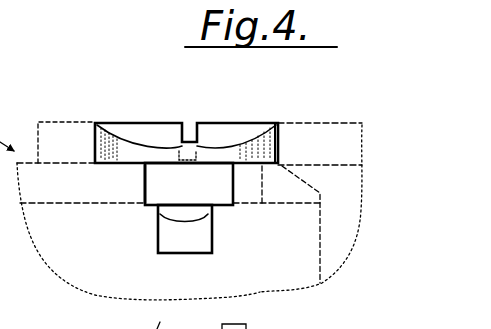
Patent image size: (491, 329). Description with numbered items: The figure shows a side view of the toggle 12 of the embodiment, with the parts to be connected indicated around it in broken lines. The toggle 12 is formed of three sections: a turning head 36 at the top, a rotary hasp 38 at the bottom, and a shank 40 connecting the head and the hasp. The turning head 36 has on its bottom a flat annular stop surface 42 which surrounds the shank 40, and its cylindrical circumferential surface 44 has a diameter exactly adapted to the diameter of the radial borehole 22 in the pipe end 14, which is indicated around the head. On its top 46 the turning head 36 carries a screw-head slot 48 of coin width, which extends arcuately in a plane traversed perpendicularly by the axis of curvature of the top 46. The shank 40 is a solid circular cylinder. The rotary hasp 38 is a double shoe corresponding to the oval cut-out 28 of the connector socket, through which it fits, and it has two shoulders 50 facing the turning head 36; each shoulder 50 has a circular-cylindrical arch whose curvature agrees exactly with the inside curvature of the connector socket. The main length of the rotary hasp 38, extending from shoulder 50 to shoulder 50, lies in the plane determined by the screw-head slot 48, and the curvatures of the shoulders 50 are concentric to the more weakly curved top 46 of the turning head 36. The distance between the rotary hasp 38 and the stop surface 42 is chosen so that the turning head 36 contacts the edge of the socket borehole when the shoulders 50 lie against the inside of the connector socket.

The toggle 12 is at (160, 118).
The pipe end 14 is at (50, 122).
The radial borehole 22 is at (94, 142).
The oval cut-out 28 is at (120, 178).
The turning head 36 is at (128, 127).
The rotary hasp 38 is at (190, 245).
The shank 40 is at (175, 185).
The annular stop surface 42 is at (133, 167).
The cylindrical circumferential surface 44 is at (280, 146).
The top 46 is at (213, 123).
The screw-head slot 48 is at (190, 134).
The shoulders 50 is at (188, 213).